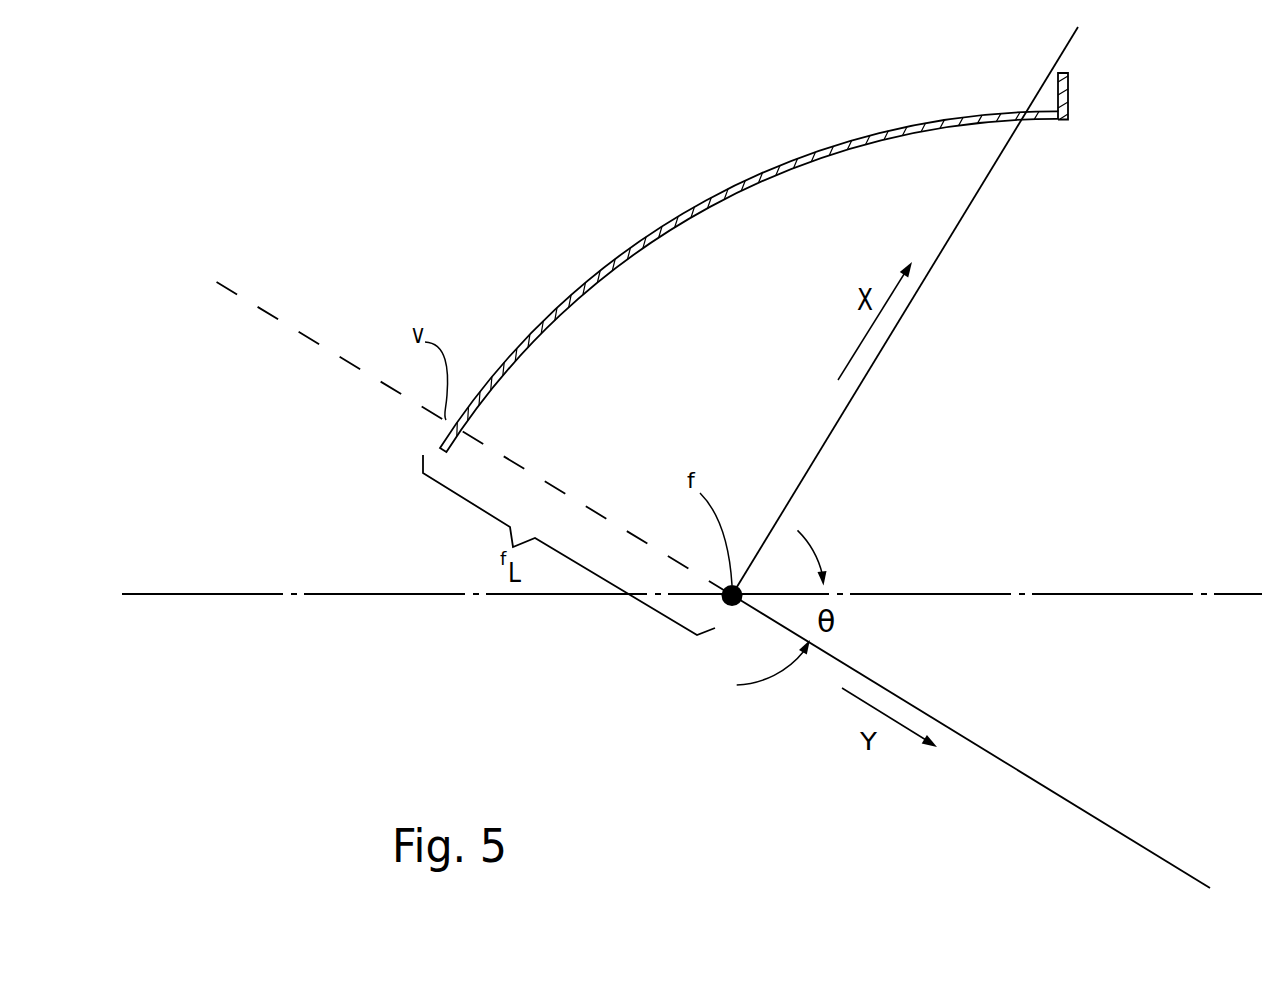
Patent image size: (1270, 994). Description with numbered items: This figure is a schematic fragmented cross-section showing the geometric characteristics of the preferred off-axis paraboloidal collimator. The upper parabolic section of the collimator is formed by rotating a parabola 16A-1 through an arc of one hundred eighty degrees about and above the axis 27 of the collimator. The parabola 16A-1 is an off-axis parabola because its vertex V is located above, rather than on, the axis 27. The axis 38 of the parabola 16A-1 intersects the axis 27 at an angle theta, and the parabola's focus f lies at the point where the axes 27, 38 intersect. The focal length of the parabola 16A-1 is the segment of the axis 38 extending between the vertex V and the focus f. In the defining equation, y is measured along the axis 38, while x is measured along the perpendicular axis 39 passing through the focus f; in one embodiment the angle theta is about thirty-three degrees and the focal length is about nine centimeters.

The parabola 16A-1 is at (703, 200).
The axis 27 is at (1103, 592).
The axis of parabola 38 is at (1047, 787).
The perpendicular axis 39 is at (1007, 148).